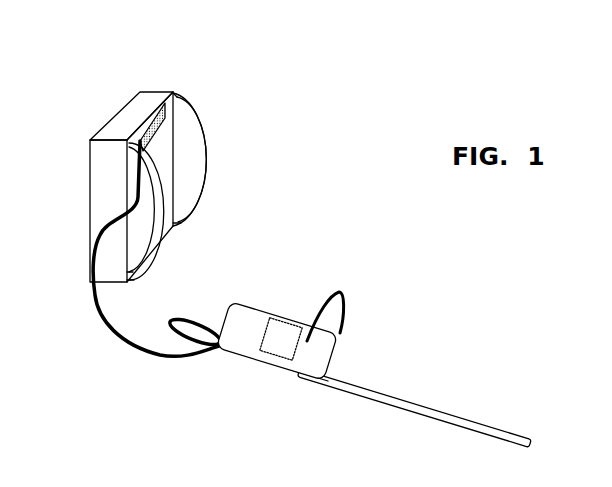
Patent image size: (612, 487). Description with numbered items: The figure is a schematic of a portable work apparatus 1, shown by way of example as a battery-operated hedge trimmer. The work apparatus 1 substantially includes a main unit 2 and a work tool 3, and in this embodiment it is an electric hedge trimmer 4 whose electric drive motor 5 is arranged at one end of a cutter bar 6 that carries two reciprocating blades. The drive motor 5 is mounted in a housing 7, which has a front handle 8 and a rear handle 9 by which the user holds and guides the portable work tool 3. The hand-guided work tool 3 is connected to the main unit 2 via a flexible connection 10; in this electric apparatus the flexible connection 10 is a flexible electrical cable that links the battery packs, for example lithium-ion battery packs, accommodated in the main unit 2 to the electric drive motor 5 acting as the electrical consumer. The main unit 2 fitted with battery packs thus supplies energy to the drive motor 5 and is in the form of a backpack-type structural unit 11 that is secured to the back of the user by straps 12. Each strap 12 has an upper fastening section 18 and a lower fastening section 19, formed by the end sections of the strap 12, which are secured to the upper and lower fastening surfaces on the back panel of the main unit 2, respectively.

The work apparatus 1 is at (253, 227).
The main unit 2 is at (88, 175).
The work tool 3 is at (374, 362).
The electric hedge trimmer 4 is at (310, 382).
The electric drive motor 5 is at (282, 347).
The cutter bar 6 is at (500, 433).
The housing 7 is at (252, 334).
The front handle 8 is at (342, 292).
The rear handle 9 is at (185, 333).
The flexible connection 10 is at (98, 318).
The backpack-type structural unit 11 is at (128, 96).
The straps 12 is at (210, 137).
The upper fastening section 18 is at (177, 97).
The lower fastening section 19 is at (180, 228).